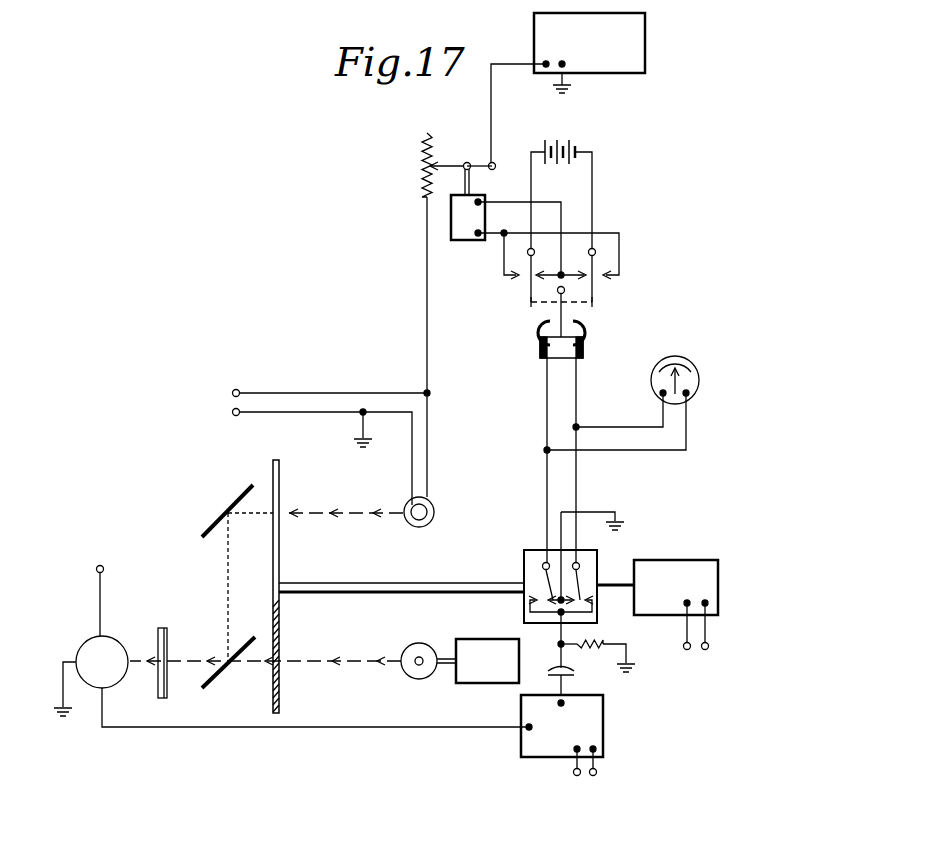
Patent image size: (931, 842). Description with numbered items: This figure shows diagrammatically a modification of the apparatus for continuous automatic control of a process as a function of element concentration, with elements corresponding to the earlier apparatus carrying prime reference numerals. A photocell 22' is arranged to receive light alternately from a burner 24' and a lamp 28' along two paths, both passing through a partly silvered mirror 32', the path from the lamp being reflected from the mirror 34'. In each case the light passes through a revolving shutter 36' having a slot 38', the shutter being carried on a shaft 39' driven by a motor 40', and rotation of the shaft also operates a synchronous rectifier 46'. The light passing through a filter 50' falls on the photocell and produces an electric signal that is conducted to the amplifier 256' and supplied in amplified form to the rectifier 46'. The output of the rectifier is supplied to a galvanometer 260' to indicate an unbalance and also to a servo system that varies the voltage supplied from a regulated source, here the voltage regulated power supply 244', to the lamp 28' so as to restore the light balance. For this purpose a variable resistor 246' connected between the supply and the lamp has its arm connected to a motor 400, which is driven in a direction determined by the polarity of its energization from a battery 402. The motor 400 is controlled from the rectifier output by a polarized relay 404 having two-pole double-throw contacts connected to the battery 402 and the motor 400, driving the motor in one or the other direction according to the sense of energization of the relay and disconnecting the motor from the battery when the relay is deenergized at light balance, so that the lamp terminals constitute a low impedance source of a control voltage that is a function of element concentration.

The voltage regulated power supply 244' is at (597, 91).
The variable resistor 246' is at (457, 311).
The motor 400 is at (459, 237).
The battery 402 is at (580, 143).
The polarized relay 404 is at (598, 341).
The galvanometer 260' is at (635, 391).
The synchronous rectifier 46' is at (584, 578).
The motor 40' is at (676, 586).
The amplifier 256' is at (380, 708).
The burner 24' is at (460, 645).
The lamp 28' is at (357, 459).
The mirror 34' is at (237, 559).
The revolving shutter 36' is at (301, 586).
The shaft 39' is at (401, 568).
The slot 38' is at (265, 647).
The partly silvered mirror 32' is at (228, 675).
The filter 50' is at (152, 647).
The photocell 22' is at (101, 645).